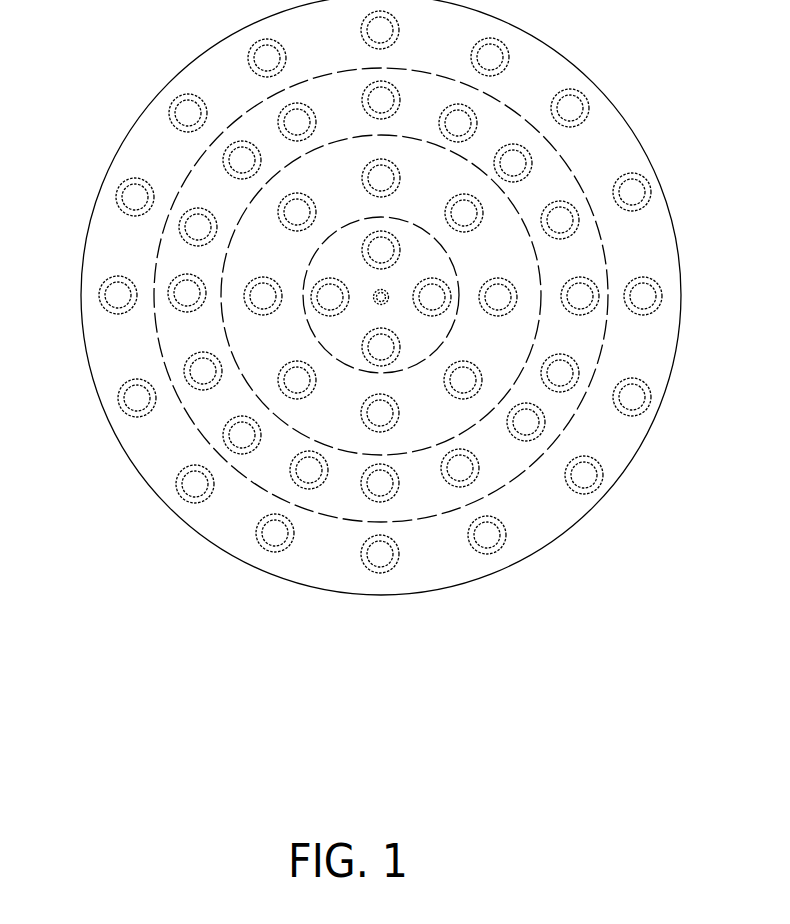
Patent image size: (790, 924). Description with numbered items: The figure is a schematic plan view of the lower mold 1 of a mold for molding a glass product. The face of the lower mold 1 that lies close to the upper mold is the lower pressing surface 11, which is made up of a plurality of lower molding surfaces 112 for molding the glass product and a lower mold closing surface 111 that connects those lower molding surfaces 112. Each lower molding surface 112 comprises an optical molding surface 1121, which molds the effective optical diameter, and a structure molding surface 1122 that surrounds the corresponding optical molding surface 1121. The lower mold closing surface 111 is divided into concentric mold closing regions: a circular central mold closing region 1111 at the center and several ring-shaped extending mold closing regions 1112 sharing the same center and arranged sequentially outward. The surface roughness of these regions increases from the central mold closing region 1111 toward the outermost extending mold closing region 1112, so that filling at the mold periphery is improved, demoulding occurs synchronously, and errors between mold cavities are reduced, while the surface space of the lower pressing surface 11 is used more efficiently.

The lower mold 1 is at (132, 463).
The lower pressing surface 11 is at (390, 377).
The lower mold closing surface 111 is at (331, 423).
The central mold closing region 1111 is at (348, 340).
The extending mold closing region 1112 is at (440, 373).
The lower molding surface 112 is at (390, 350).
The optical molding surface 1121 is at (526, 422).
The structure molding surface 1122 is at (543, 427).